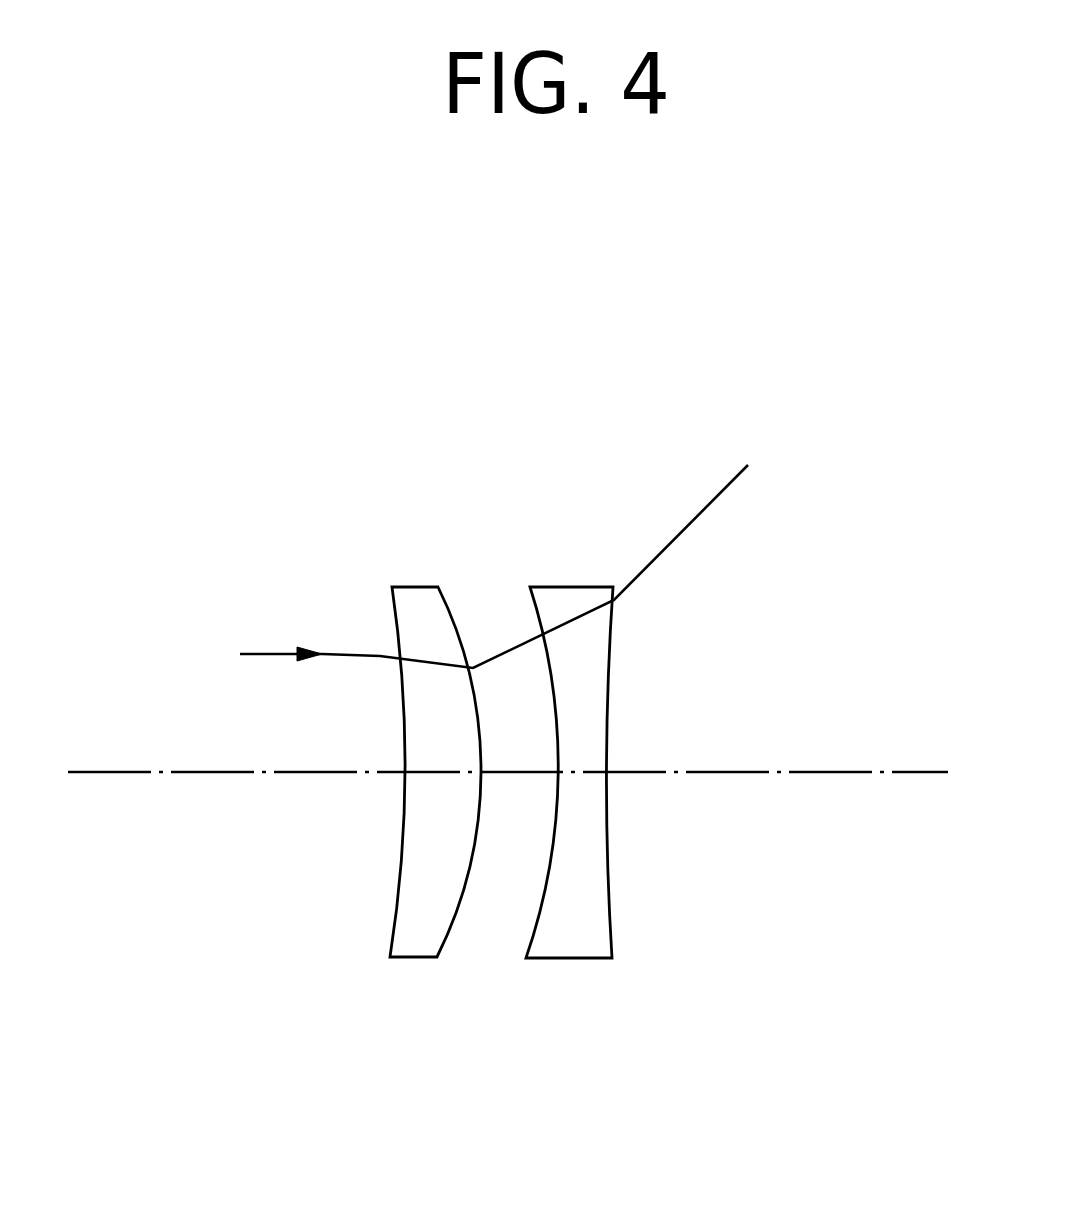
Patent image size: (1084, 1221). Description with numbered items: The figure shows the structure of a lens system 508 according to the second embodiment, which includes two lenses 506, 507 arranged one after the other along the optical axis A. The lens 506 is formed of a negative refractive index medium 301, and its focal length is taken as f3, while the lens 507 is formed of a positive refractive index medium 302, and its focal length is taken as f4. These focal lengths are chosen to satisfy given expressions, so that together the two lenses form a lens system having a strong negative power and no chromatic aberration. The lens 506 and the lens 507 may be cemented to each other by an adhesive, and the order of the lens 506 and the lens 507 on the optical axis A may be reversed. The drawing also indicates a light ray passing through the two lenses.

The optical axis A is at (104, 770).
The negative refractive index medium 301 is at (432, 780).
The positive refractive index medium 302 is at (569, 780).
The lens 506 is at (427, 583).
The lens 507 is at (566, 583).
The lens system 508 is at (612, 473).